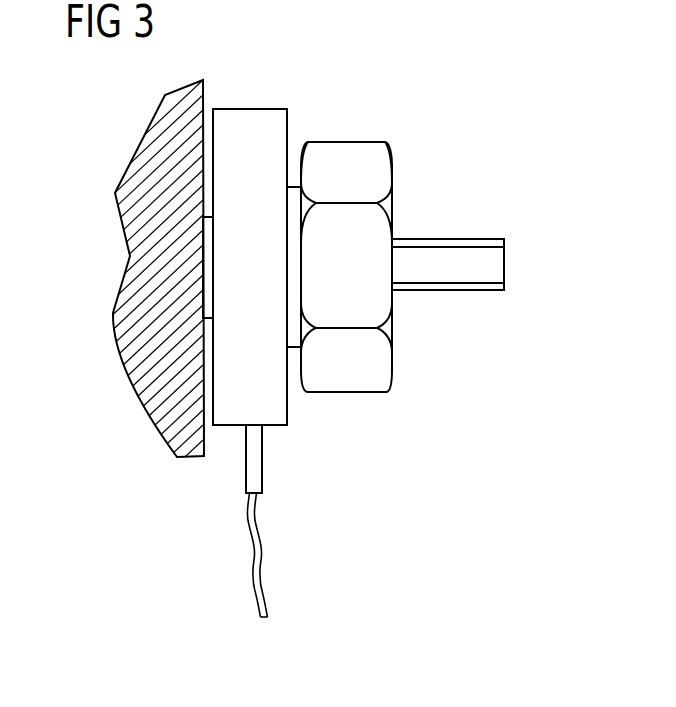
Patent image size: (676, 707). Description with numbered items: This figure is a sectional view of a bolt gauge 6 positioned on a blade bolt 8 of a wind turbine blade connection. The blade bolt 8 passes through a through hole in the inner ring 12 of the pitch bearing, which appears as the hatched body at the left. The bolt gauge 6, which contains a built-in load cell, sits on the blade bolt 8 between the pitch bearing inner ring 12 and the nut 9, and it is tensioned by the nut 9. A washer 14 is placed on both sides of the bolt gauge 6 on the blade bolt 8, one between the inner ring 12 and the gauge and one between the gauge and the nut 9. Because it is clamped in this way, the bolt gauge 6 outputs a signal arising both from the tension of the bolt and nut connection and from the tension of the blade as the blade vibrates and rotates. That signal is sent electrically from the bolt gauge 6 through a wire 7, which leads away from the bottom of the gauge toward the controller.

The bolt gauge 6 is at (250, 117).
The wire 7 is at (262, 548).
The blade bolt 8 is at (497, 265).
The nut 9 is at (343, 150).
The inner ring 12 is at (130, 262).
The washer 14 is at (212, 267).